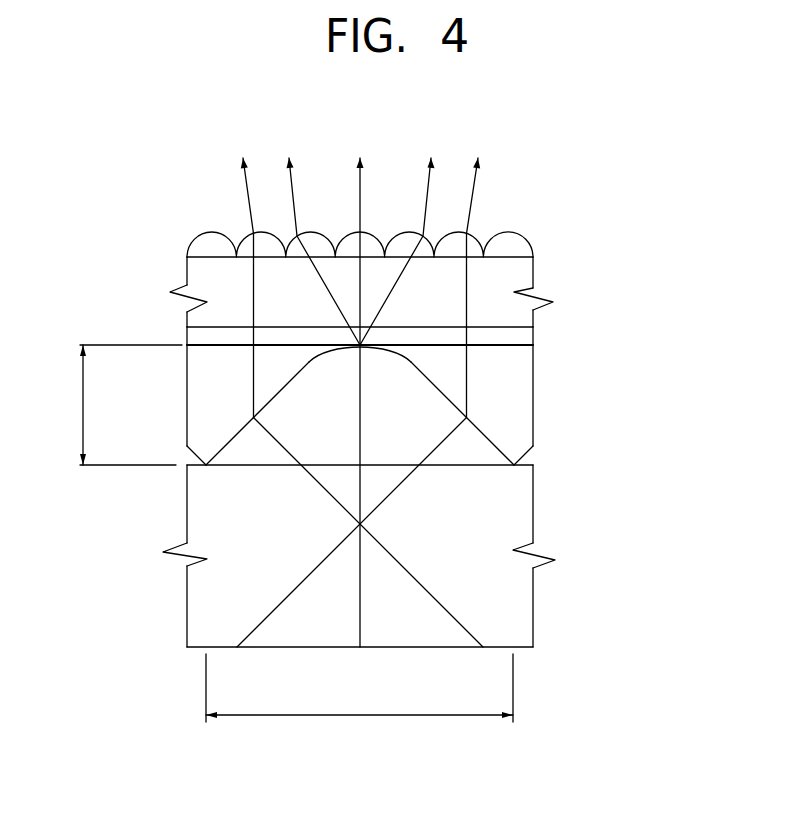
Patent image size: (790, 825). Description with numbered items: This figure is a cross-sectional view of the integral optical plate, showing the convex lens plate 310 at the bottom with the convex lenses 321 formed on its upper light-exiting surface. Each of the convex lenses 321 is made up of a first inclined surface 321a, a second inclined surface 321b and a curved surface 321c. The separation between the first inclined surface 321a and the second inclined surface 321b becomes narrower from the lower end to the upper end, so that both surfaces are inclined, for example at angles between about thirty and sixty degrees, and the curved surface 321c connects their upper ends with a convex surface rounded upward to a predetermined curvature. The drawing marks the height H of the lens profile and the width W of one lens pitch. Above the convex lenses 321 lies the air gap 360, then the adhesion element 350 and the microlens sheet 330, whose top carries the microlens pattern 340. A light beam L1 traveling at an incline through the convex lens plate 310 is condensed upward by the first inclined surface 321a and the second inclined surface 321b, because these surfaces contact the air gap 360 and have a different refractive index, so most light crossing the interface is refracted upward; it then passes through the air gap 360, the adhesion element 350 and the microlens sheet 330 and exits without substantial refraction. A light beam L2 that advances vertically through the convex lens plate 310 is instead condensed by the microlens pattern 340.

The convex lens plate 310 is at (522, 512).
The convex lenses 321 is at (378, 406).
The first inclined surface 321a is at (236, 433).
The second inclined surface 321b is at (485, 433).
The curved surface 321c is at (308, 362).
The microlens sheet 330 is at (522, 280).
The microlens pattern 340 is at (522, 245).
The adhesion element 350 is at (522, 338).
The air gap 360 is at (522, 370).
The light beam L1 is at (268, 616).
The light beam L2 is at (360, 566).
The pattern height H is at (123, 405).
The pattern width W is at (359, 688).